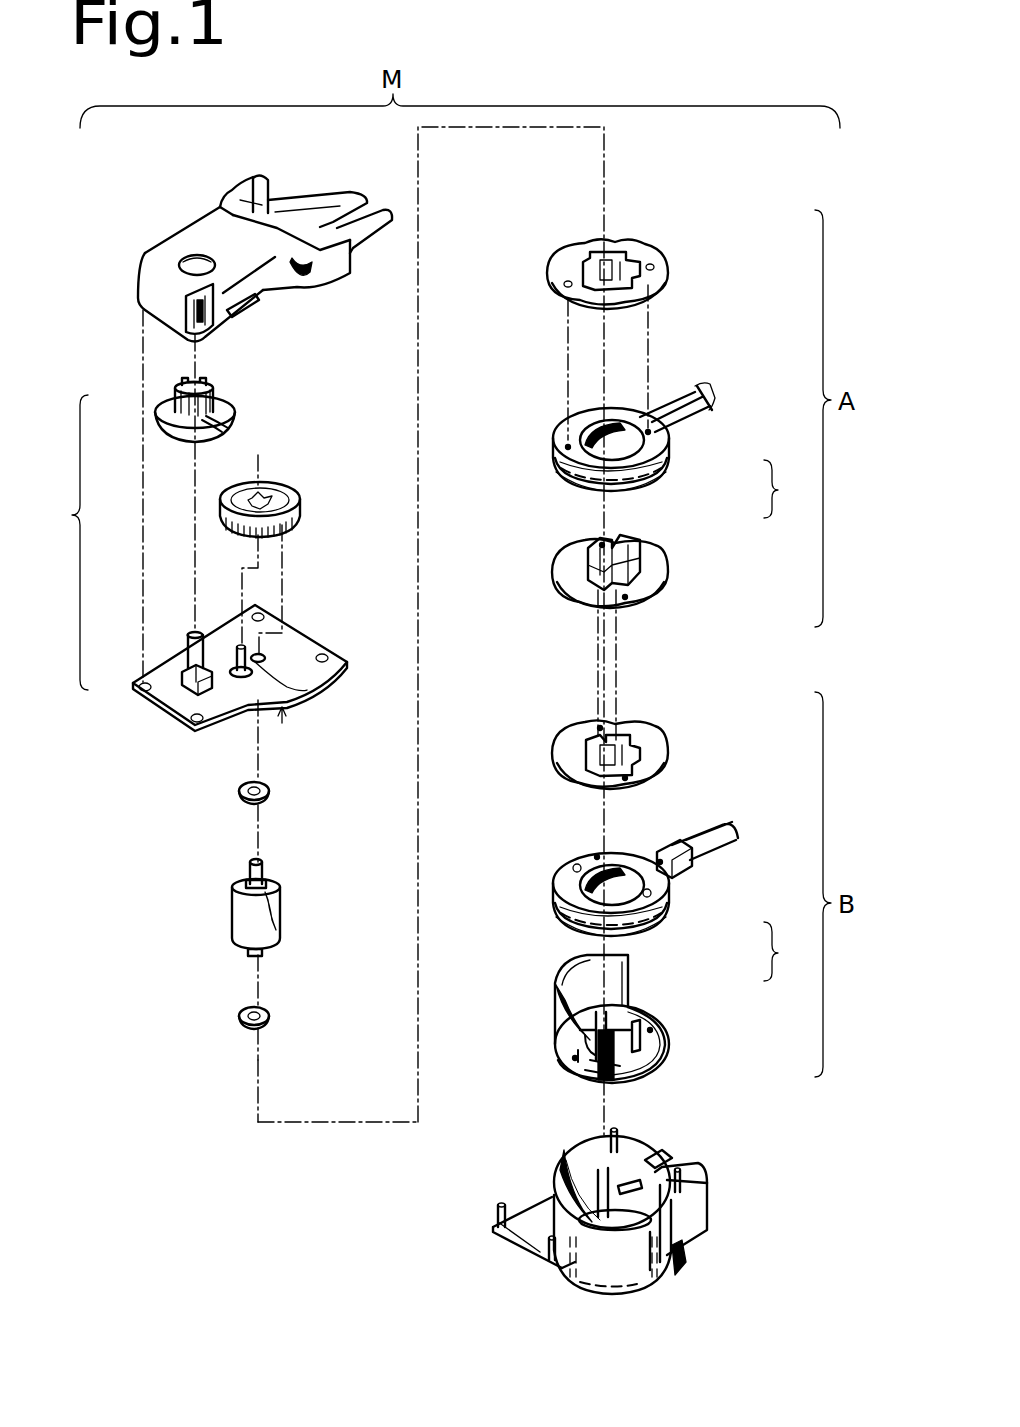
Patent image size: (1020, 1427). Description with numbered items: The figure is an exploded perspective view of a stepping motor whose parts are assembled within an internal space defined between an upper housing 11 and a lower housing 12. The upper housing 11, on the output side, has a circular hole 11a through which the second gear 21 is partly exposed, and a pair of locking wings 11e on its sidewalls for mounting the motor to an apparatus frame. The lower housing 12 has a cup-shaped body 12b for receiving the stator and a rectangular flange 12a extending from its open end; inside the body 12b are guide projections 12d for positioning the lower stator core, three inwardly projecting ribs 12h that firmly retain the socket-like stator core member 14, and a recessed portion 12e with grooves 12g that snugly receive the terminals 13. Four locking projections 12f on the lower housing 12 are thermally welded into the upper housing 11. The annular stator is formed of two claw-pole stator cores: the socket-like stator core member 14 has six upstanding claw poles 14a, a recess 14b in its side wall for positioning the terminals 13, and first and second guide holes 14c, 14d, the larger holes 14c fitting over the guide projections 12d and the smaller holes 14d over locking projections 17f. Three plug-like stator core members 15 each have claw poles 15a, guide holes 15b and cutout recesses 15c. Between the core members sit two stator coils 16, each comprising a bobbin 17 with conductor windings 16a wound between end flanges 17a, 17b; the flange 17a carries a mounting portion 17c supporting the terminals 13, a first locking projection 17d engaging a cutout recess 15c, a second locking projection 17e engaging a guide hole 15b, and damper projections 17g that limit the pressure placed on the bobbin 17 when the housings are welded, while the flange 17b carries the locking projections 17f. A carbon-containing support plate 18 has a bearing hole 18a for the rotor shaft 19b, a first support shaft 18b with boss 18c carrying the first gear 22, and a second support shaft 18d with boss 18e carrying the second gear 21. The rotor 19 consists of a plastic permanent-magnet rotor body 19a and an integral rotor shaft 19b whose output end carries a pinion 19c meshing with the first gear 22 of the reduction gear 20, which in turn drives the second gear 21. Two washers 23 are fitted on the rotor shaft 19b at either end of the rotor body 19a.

The upper housing 11 is at (237, 254).
The circular hole 11a is at (190, 270).
The locking wings 11e is at (256, 308).
The lower housing 12 is at (592, 1214).
The rectangular flange 12a is at (497, 1236).
The cup-shaped body 12b is at (572, 1165).
The guide projections 12d is at (622, 1250).
The recessed portion 12e is at (650, 1155).
The locking projections 12f is at (496, 1210).
The grooves 12g is at (682, 1170).
The ribs 12h is at (600, 1175).
The terminals 13 is at (700, 395).
The socket-like stator core member 14 is at (613, 1026).
The claw poles 14a is at (636, 1012).
The recess 14b is at (628, 975).
The first guide holes 14c is at (590, 1028).
The second guide holes 14d is at (652, 1030).
The plug-like stator core member 15 is at (620, 499).
The claw poles 15a is at (620, 266).
The guide holes 15b is at (565, 285).
The cutout recesses 15c is at (640, 552).
The stator coil 16 is at (632, 674).
The conductor windings 16a is at (560, 467).
The bobbin 17 is at (641, 703).
The end flange 17a is at (650, 485).
The end flange 17b is at (648, 457).
The mounting portion 17c is at (690, 866).
The first locking projection 17d is at (662, 863).
The second locking projection 17e is at (595, 855).
The locking projections 17f is at (565, 447).
The damper projections 17g is at (573, 867).
The support plate 18 is at (242, 655).
The bearing hole 18a is at (268, 658).
The first support shaft 18b is at (287, 692).
The circular boss 18c is at (243, 680).
The second support shaft 18d is at (198, 632).
The circular boss 18e is at (190, 680).
The rotor 19 is at (270, 917).
The rotor body 19a is at (240, 917).
The rotor shaft 19b is at (248, 884).
The pinion 19c is at (264, 864).
The reduction gear 20 is at (59, 542).
The second gear 21 is at (168, 408).
The first gear 22 is at (220, 504).
The washer 23 is at (270, 790).